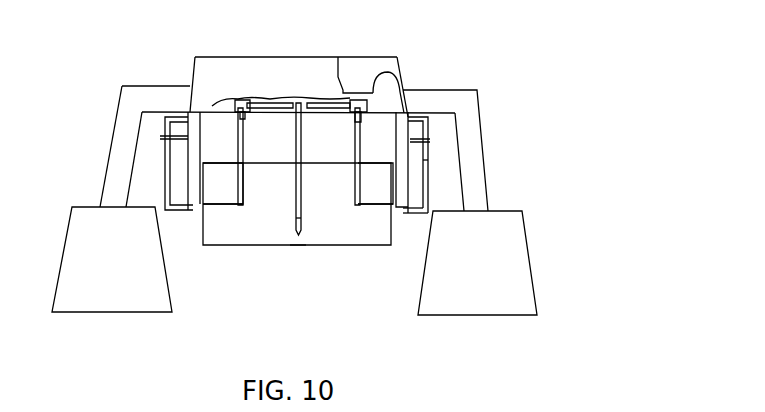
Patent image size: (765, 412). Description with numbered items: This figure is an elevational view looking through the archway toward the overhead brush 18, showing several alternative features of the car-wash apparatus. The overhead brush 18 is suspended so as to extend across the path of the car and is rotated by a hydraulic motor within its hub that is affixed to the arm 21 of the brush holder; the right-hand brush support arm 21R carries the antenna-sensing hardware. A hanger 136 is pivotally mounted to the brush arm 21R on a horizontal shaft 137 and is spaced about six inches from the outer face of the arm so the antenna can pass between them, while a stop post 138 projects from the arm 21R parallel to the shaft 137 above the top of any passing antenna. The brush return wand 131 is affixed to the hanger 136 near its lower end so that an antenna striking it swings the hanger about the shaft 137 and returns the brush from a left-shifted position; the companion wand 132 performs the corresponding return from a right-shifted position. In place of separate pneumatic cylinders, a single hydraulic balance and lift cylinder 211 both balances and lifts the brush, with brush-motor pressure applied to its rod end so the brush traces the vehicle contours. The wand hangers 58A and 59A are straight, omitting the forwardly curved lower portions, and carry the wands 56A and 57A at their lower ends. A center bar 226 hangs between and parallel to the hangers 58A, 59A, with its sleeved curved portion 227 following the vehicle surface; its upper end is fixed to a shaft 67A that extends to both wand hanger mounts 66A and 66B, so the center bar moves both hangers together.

The overhead brush 18 is at (241, 247).
The arm 21 is at (198, 176).
The brush support arm 21R is at (398, 121).
The wand 56A is at (218, 204).
The wand 57A is at (382, 204).
The hanger 58A is at (244, 188).
The hanger 59A is at (358, 172).
The wand hanger mount 66A is at (401, 63).
The wand hanger mount 66B is at (240, 100).
The shaft 67A is at (269, 98).
The brush return wand 131 is at (418, 214).
The brush return wand 132 is at (182, 213).
The hanger 136 is at (428, 179).
The horizontal shaft 137 is at (429, 113).
The stop post 138 is at (431, 139).
The hydraulic balance and lift cylinder 211 is at (378, 70).
The center bar 226 is at (303, 195).
The curved portion 227 is at (295, 246).